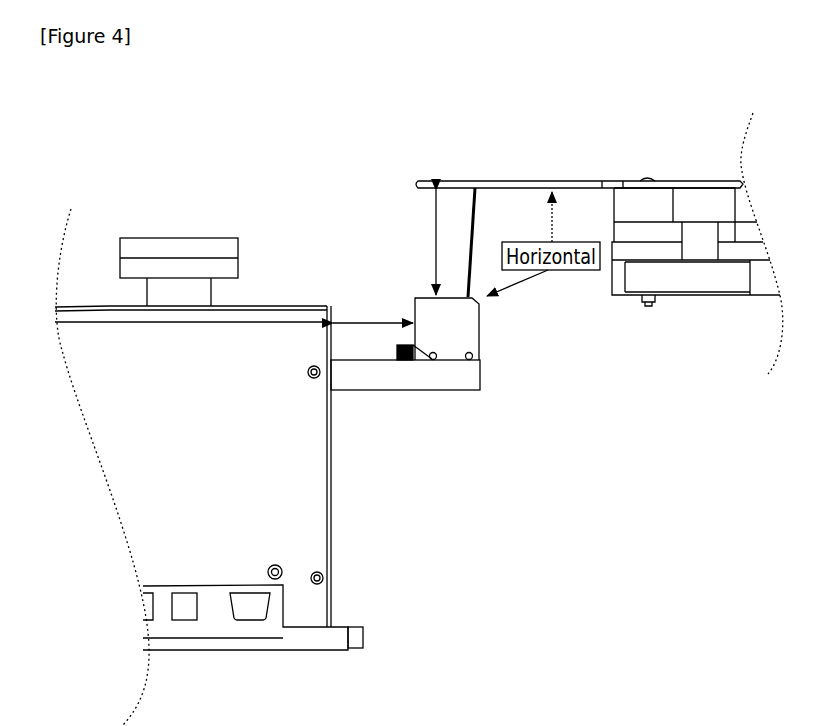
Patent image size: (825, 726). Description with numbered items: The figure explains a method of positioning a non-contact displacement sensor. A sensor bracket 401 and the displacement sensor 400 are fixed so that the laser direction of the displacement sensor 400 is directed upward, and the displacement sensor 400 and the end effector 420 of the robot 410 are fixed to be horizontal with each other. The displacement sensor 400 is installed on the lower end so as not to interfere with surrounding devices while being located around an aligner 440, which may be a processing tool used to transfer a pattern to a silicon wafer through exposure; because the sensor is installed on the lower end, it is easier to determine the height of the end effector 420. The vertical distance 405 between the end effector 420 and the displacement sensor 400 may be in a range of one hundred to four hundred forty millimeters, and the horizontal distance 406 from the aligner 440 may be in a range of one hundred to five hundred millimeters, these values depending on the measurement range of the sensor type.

The displacement sensor 400 is at (487, 325).
The sensor bracket 401 is at (357, 400).
The vertical distance 405 is at (432, 228).
The horizontal distance 406 is at (373, 321).
The robot 410 is at (703, 167).
The end effector 420 is at (605, 167).
The aligner 440 is at (203, 218).